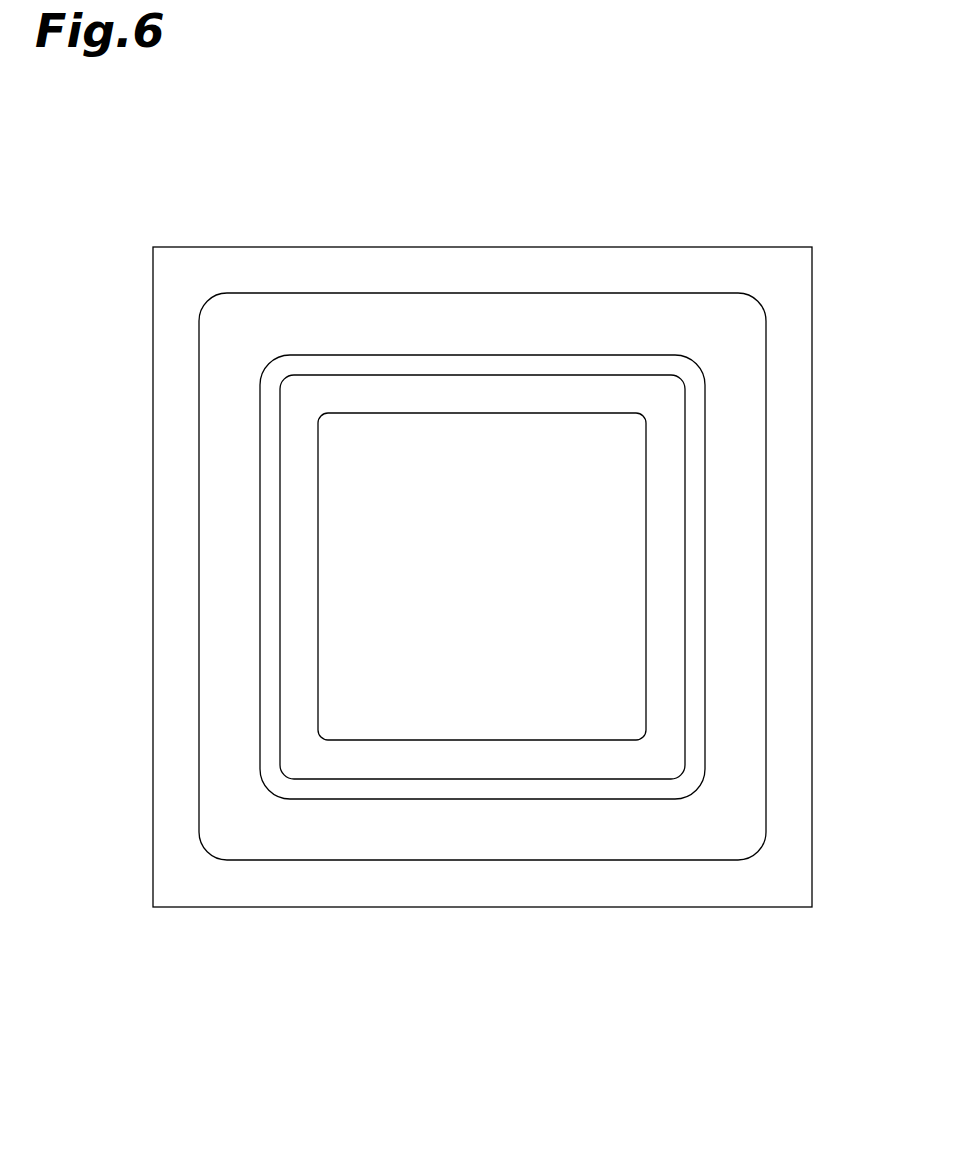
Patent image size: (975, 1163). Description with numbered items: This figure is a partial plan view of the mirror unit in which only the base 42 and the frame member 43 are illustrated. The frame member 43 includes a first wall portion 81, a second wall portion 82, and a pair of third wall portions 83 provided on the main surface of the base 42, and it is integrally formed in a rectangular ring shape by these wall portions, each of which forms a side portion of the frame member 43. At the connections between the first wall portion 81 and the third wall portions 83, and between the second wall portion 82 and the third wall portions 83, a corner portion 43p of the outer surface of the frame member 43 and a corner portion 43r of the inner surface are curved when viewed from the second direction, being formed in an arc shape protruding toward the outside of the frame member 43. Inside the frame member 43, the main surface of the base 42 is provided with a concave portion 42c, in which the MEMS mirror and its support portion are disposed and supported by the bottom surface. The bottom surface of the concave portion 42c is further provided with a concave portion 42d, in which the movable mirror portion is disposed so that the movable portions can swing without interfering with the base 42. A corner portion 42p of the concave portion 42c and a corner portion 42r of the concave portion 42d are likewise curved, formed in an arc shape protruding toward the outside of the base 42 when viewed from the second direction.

The base 42 is at (773, 247).
The concave portion 42c is at (685, 458).
The concave portion 42d is at (647, 604).
The corner portion of the concave portion 42p is at (292, 393).
The corner portion of the concave portion 42r is at (634, 430).
The frame member 43 is at (767, 530).
The corner portion of the outer surface of the frame member 43p is at (204, 288).
The corner portion of the inner surface of the frame member 43r is at (691, 352).
The first wall portion 81 is at (228, 700).
The second wall portion 82 is at (735, 681).
The third wall portion 83 is at (483, 325).